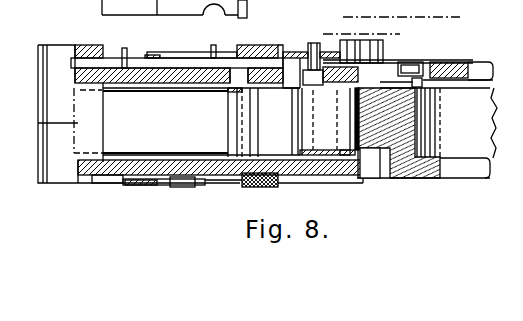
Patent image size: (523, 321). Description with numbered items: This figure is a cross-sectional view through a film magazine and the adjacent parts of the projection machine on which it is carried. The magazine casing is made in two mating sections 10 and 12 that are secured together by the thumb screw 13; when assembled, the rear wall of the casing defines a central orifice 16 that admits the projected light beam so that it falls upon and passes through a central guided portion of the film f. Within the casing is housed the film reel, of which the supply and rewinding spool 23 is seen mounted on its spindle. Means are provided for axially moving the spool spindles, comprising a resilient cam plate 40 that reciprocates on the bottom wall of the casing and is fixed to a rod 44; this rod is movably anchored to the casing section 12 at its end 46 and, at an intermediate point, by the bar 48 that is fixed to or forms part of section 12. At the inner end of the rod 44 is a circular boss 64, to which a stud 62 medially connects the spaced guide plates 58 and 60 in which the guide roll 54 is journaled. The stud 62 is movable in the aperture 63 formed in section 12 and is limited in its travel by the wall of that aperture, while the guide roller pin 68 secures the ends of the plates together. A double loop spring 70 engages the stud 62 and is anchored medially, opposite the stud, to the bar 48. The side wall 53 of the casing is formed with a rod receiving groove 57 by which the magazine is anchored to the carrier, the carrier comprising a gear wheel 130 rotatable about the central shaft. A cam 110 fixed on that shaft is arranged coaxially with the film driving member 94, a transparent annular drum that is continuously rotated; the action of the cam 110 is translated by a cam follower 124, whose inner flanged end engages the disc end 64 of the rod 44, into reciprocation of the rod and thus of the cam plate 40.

The casing section 10 is at (62, 176).
The casing section 12 is at (47, 75).
The thumb screw 13 is at (250, 132).
The orifice 16 is at (83, 112).
The supply spool 23 is at (128, 146).
The cam plate 40 is at (186, 56).
The rod 44 is at (225, 62).
The rod end 46 is at (89, 72).
The bar 48 is at (270, 46).
The side wall 53 is at (190, 12).
The guide roll 54 is at (342, 157).
The rod receiving groove 57 is at (214, 31).
The guide plate 58 is at (340, 66).
The guide plate 60 is at (345, 172).
The stud 62 is at (313, 44).
The aperture 63 is at (284, 52).
The circular boss 64 is at (302, 52).
The guide roller pin 68 is at (313, 158).
The double loop spring 70 is at (271, 122).
The film driving member 94 is at (403, 120).
The cam 110 is at (456, 66).
The cam follower 124 is at (397, 62).
The gear wheel 130 is at (380, 20).
The film f is at (285, 143).